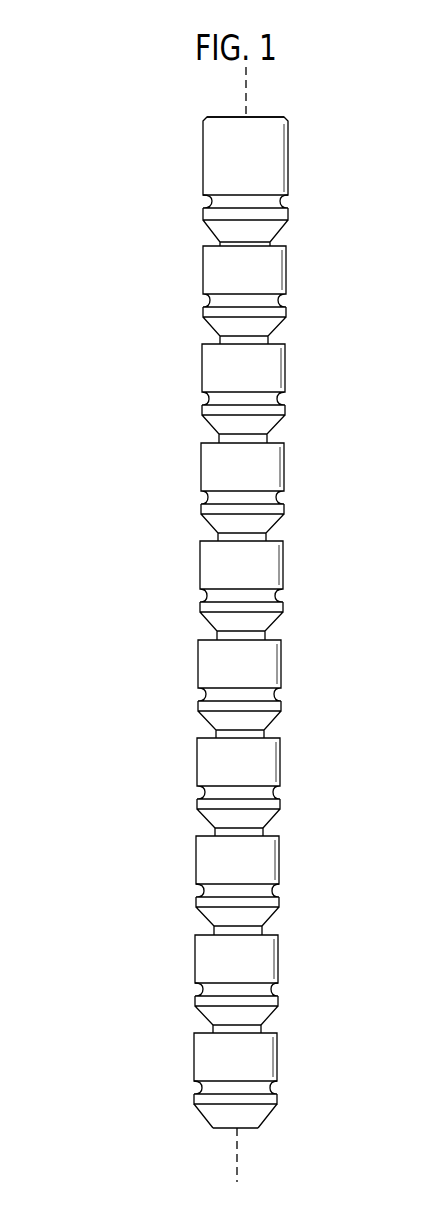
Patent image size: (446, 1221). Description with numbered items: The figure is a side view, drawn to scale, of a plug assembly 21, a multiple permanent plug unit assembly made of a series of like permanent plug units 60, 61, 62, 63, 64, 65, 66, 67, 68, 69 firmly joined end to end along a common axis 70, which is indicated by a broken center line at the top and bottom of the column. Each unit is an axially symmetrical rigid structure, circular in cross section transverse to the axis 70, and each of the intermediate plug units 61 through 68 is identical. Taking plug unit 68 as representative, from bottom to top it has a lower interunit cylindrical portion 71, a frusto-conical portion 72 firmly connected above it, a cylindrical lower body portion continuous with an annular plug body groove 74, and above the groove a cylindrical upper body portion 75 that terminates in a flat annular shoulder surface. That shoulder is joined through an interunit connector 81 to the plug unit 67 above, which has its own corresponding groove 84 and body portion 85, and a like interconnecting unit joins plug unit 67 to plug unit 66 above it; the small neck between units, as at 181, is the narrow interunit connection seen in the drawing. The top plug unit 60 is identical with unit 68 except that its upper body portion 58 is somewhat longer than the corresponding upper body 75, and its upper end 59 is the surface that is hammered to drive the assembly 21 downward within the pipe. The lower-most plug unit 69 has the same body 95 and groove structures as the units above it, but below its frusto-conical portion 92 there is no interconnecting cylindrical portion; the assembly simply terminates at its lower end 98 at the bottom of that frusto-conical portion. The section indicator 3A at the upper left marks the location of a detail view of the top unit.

The plug assembly 21 is at (201, 624).
The section view indicator 3A is at (196, 117).
The permanent plug upper body portion 58 is at (222, 147).
The upper end 59 is at (260, 91).
The top plug unit 60 is at (260, 156).
The permanent plug unit 61 is at (311, 241).
The permanent plug unit 62 is at (311, 339).
The permanent plug unit 63 is at (311, 438).
The permanent plug unit 64 is at (311, 536).
The permanent plug unit 65 is at (311, 635).
The permanent plug unit 66 is at (240, 786).
The permanent plug unit 67 is at (233, 889).
The permanent plug unit 68 is at (234, 984).
The lower-most plug unit 69 is at (254, 1091).
The axis 70 is at (219, 624).
The lower permanent plug unit interunit cylindrical portion 71 is at (210, 1032).
The permanent plug unit frusto-conical portion 72 is at (210, 1017).
The annular plug body groove 74 is at (213, 994).
The cylindrical permanent plug body upper portion 75 is at (203, 956).
The permanent plug assembly interunit connector 81 is at (210, 933).
The groove 84 is at (222, 893).
The body portion 85 is at (208, 853).
The frusto-conical portion 92 is at (217, 1112).
The cylindrical body 95 is at (213, 1058).
The lower end 98 is at (247, 1141).
The reduced neck 181 is at (215, 833).